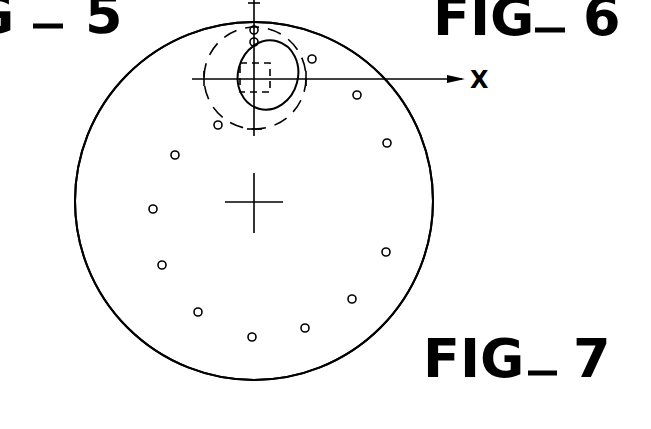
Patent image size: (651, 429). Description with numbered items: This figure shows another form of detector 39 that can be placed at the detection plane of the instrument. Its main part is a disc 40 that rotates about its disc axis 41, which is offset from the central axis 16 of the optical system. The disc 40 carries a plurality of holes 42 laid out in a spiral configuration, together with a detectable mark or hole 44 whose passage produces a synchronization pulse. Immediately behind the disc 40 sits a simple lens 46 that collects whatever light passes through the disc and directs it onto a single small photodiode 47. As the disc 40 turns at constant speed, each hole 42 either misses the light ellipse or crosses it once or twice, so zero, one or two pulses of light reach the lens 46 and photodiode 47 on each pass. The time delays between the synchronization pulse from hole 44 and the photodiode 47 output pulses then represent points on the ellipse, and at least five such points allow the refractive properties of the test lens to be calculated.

The central axis 16 is at (254, 78).
The detector 39 is at (84, 127).
The disc 40 is at (427, 247).
The disc axis 41 is at (254, 202).
The holes 42 is at (391, 144).
The detectable mark or hole 44 is at (258, 27).
The lens 46 is at (210, 85).
The photodiode 47 is at (262, 60).